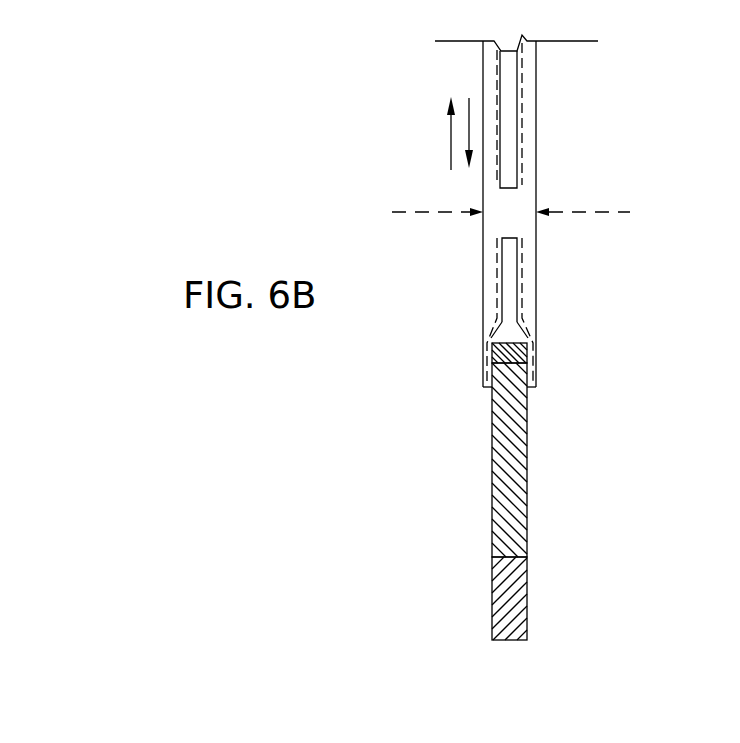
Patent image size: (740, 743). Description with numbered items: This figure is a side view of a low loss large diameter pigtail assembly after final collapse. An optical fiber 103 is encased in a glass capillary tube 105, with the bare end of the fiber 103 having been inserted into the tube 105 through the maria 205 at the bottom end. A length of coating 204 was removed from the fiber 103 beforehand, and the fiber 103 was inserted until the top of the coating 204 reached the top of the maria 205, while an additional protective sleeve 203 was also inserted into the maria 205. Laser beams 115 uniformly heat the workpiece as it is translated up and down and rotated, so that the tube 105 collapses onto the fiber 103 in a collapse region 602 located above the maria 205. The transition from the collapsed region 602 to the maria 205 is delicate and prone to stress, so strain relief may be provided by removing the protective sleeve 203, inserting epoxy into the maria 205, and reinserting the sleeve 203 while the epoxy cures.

The capillary tube 105 is at (532, 68).
The optical fiber 103 is at (513, 123).
The collapse region 602 is at (512, 208).
The laser beam 115 is at (510, 223).
The maria 205 is at (491, 380).
The protective sleeve 203 is at (510, 462).
The coating 204 is at (513, 597).